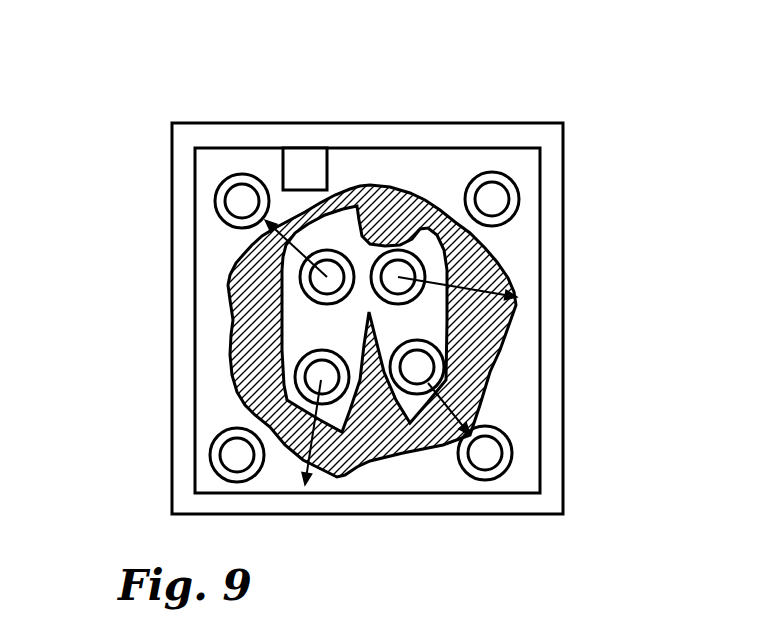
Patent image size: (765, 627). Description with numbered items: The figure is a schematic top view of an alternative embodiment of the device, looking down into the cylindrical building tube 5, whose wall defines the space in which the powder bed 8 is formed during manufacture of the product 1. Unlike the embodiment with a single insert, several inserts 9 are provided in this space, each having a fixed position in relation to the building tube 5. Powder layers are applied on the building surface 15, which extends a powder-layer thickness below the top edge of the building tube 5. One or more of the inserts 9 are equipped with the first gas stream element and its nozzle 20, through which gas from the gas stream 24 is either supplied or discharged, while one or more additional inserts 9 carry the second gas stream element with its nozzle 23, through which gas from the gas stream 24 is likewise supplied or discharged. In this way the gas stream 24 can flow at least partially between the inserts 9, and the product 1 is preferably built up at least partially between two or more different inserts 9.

The product 1 is at (227, 380).
The building tube 5 is at (173, 268).
The powder bed 8 is at (517, 348).
The insert 9 is at (303, 167).
The building surface 15 is at (145, 351).
The nozzle 20 is at (487, 453).
The nozzle 23 is at (520, 198).
The gas stream 24 is at (300, 462).